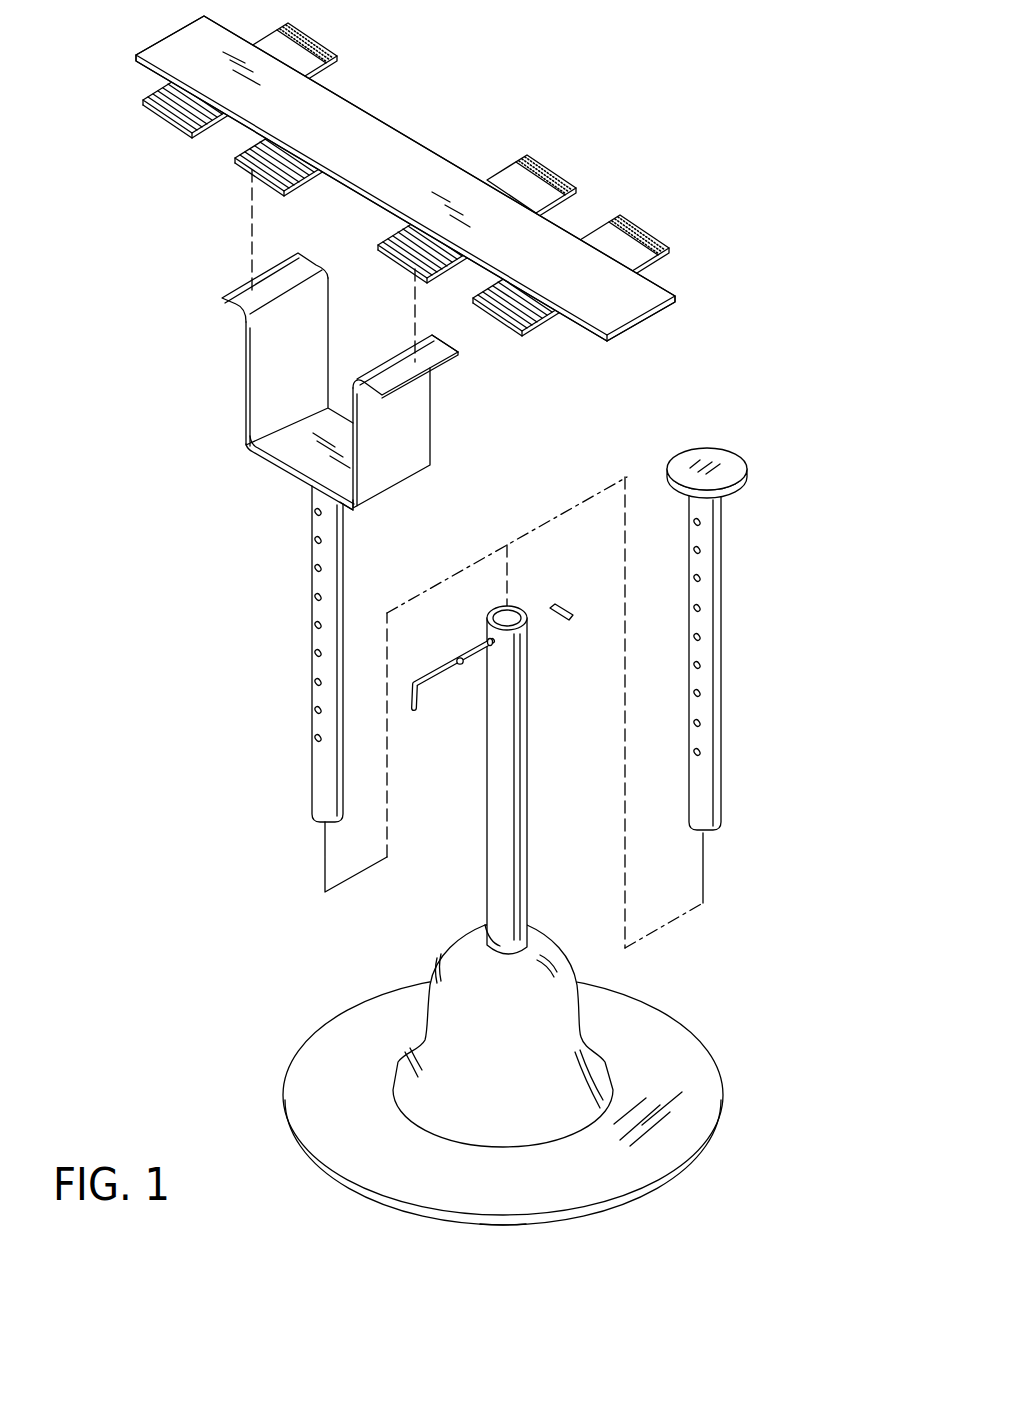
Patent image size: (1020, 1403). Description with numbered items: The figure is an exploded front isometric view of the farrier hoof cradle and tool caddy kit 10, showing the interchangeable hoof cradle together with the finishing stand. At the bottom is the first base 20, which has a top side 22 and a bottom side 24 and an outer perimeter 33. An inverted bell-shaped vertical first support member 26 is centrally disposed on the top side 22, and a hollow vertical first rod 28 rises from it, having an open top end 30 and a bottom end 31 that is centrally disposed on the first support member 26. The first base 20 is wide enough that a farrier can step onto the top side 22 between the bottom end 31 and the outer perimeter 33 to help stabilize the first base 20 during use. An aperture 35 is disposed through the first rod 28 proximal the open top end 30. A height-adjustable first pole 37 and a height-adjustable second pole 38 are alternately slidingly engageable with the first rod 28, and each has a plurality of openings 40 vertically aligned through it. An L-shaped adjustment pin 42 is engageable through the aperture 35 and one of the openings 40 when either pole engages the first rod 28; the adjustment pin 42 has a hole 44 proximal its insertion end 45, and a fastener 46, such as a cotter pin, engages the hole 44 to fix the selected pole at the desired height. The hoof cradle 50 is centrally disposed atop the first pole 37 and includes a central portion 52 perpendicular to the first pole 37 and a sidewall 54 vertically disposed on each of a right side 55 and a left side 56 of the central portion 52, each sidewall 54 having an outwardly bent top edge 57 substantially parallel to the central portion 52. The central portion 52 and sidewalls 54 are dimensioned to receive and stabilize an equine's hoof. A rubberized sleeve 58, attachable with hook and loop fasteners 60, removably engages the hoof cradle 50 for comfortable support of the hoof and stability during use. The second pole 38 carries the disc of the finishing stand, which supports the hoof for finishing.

The farrier hoof cradle and tool caddy kit 10 is at (748, 340).
The first base 20 is at (719, 1070).
The top side 22 is at (663, 1017).
The bottom side 24 is at (637, 1203).
The vertical first support member 26 is at (446, 956).
The first rod 28 is at (525, 815).
The open top end 30 is at (518, 607).
The bottom end 31 is at (487, 920).
The outer perimeter 33 is at (522, 1222).
The aperture 35 is at (517, 640).
The first pole 37 is at (312, 673).
The second pole 38 is at (722, 652).
The openings 40 is at (321, 568).
The adjustment pin 42 is at (417, 693).
The hole 44 is at (465, 665).
The insertion end 45 is at (461, 660).
The fastener 46 is at (568, 616).
The hoof cradle 50 is at (431, 466).
The central portion 52 is at (307, 476).
The sidewall 54 is at (417, 407).
The right side 55 is at (354, 508).
The left side 56 is at (263, 446).
The outwardly bent top edge 57 is at (463, 336).
The rubberized sleeve 58 is at (370, 196).
The hook and loop fasteners 60 is at (417, 216).